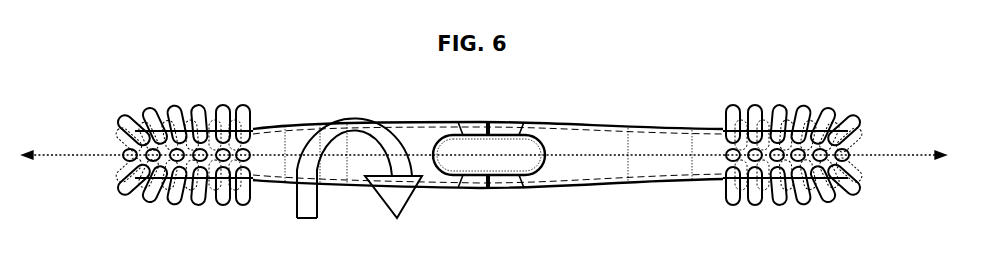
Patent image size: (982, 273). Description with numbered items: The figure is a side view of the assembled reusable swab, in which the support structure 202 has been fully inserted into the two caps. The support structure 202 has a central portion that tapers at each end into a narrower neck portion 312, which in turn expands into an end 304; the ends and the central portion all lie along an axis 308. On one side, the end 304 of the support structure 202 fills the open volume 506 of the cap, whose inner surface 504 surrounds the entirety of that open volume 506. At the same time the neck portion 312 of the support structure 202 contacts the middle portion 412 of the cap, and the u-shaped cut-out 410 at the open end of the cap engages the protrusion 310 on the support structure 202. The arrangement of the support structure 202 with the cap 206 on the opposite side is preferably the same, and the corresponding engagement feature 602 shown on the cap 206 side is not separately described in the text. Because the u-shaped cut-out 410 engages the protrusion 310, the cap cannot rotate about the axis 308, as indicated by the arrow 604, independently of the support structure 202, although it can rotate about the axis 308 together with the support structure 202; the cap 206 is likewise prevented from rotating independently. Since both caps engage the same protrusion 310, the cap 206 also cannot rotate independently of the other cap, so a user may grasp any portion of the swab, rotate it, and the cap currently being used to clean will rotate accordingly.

The support structure 202 is at (533, 182).
The cap 206 is at (607, 123).
The end 304 is at (210, 200).
The axis 308 is at (50, 156).
The protrusion 310 is at (462, 176).
The neck portion 312 is at (330, 187).
The u-shaped cut-out 410 is at (463, 127).
The middle portion 412 is at (300, 127).
The inner surface 504 is at (190, 107).
The open volume 506 is at (138, 101).
The second coupling 602 is at (517, 127).
The arrow 604 is at (363, 110).